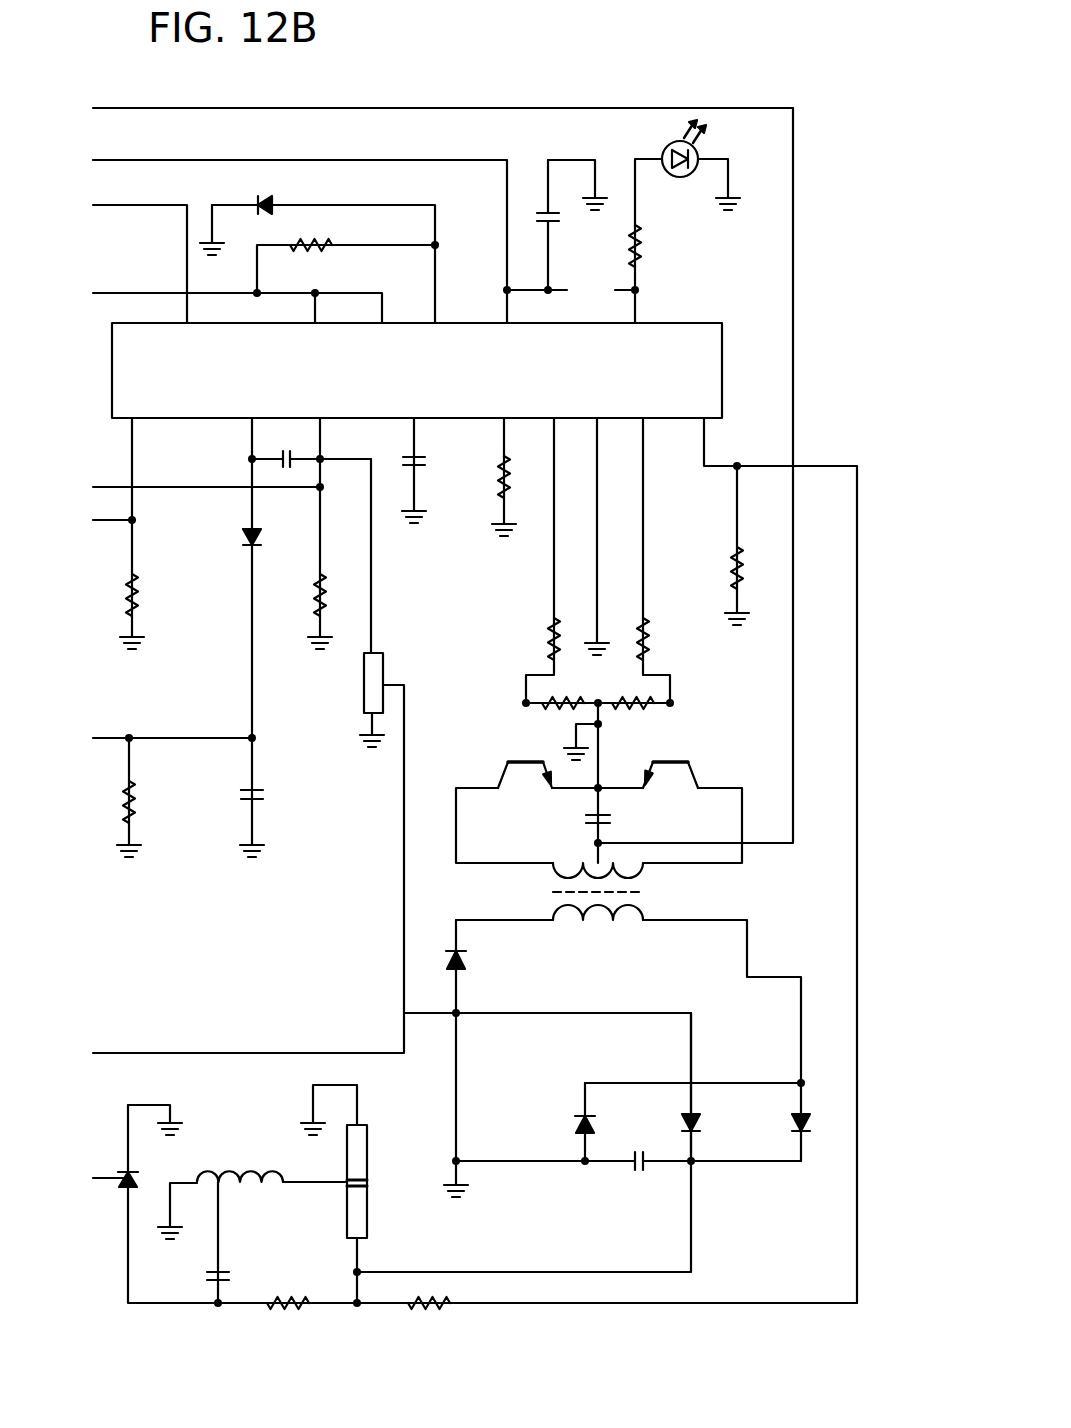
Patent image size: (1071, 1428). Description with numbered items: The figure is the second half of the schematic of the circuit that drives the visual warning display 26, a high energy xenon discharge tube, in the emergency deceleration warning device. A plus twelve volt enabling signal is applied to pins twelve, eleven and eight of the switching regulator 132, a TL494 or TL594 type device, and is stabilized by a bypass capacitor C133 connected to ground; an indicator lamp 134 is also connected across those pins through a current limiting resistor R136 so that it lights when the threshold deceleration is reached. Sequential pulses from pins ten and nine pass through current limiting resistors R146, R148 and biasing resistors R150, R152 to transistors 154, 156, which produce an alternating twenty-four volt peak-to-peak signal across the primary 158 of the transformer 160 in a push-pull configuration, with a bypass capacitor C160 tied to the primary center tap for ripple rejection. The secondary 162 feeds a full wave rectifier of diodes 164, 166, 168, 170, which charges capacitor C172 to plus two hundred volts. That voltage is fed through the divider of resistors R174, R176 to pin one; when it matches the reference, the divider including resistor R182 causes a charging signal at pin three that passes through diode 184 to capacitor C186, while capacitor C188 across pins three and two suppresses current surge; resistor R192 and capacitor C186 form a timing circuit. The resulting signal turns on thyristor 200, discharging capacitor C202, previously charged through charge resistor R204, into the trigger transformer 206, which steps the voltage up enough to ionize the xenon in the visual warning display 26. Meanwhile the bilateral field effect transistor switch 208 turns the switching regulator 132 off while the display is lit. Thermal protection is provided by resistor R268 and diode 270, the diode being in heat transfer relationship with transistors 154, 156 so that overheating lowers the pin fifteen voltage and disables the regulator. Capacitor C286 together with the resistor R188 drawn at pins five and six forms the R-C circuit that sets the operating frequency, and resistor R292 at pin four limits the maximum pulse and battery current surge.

The switching regulator 132 is at (722, 367).
The indicator lamp 134 is at (664, 150).
The current limiting resistor R136 is at (645, 260).
The bypass capacitor C133 is at (560, 222).
The diode 270 is at (270, 202).
The resistor R268 is at (318, 253).
The capacitor C188 is at (287, 447).
The diode 184 is at (240, 540).
The resistor R292 is at (142, 598).
The resistor R182 is at (312, 592).
The bilateral field effect transistor switch 208 is at (363, 680).
The capacitor C186 is at (268, 802).
The resistor R192 is at (142, 828).
The capacitor C286 is at (422, 460).
The resistor R188 is at (500, 487).
The resistor R176 is at (734, 565).
The current limiting resistor R146 is at (548, 645).
The current limiting resistor R148 is at (652, 645).
The biasing resistor R150 is at (548, 703).
The biasing resistor R152 is at (652, 703).
The transistor 154 is at (506, 780).
The transistor 156 is at (690, 778).
The bypass capacitor C160 is at (608, 828).
The primary 158 is at (575, 868).
The transformer 160 is at (647, 896).
The secondary 162 is at (598, 920).
The diode 164 is at (468, 965).
The diode 166 is at (792, 1124).
The diode 168 is at (682, 1124).
The diode 170 is at (576, 1130).
The capacitor C172 is at (640, 1172).
The resistor R174 is at (428, 1300).
The visual warning display 26 is at (368, 1165).
The thyristor 200 is at (140, 1178).
The trigger transformer 206 is at (242, 1188).
The capacitor C202 is at (210, 1276).
The charge resistor R204 is at (288, 1298).